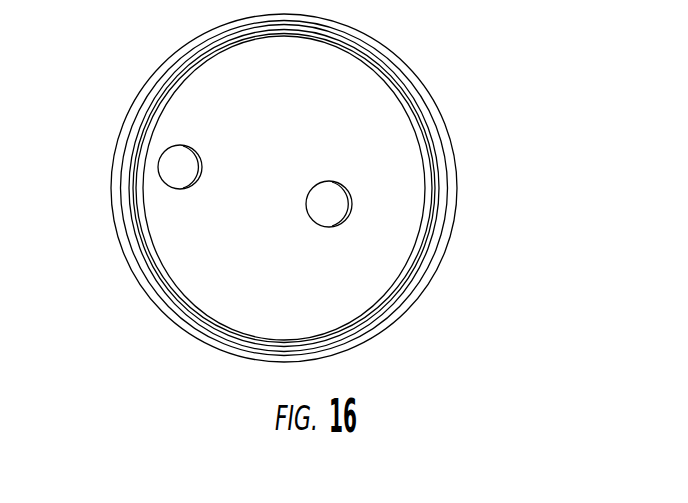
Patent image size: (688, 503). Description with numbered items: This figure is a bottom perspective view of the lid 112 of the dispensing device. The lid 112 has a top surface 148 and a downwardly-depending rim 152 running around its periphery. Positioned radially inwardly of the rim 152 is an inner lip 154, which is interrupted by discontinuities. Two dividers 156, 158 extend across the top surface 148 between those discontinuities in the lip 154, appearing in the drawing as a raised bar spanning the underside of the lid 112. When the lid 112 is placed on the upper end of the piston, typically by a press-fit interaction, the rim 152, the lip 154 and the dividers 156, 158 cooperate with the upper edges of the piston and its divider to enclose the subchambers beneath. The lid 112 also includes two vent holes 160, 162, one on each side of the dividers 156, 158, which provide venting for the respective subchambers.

The lid 112 is at (451, 283).
The top surface 148 is at (393, 170).
The rim 152 is at (428, 128).
The inner lip 154 is at (402, 67).
The divider 156 is at (223, 272).
The divider 158 is at (212, 247).
The vent hole 160 is at (328, 208).
The vent hole 162 is at (173, 171).